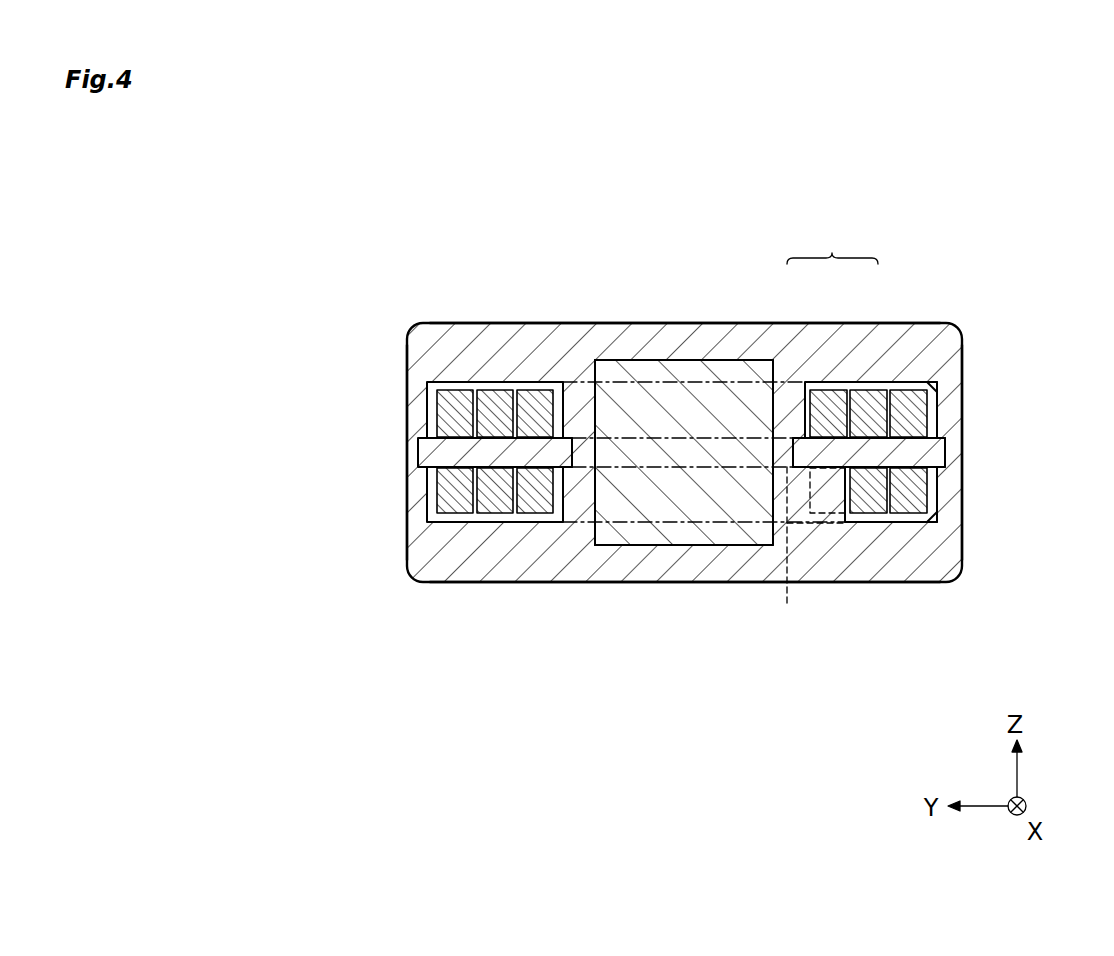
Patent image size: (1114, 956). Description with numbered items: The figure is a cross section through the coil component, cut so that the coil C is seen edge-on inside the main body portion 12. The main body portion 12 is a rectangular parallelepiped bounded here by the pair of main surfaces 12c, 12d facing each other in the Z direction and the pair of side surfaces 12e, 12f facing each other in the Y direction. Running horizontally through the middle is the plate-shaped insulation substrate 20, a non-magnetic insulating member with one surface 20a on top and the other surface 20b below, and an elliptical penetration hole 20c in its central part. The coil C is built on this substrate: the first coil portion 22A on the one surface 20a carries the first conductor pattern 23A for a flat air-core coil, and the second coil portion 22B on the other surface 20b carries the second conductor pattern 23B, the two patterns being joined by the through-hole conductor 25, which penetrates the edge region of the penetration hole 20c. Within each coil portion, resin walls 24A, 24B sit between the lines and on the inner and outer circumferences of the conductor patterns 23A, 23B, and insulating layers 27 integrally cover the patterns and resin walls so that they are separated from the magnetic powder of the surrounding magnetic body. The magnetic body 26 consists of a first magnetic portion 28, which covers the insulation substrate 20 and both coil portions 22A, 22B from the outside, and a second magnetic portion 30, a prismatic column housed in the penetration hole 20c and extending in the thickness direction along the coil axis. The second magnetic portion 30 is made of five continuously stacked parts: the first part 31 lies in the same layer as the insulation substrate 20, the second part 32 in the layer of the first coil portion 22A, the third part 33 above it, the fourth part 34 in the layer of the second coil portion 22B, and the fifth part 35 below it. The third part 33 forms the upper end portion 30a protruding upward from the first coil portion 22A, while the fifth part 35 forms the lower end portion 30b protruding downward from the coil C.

The main body portion 12 is at (368, 209).
The main surface 12c is at (540, 323).
The main surface 12d is at (527, 582).
The side surface 12e is at (962, 555).
The side surface 12f is at (407, 515).
The coil C is at (394, 382).
The insulation substrate 20 is at (948, 455).
The one surface 20a is at (940, 428).
The other surface 20b is at (940, 480).
The penetration hole 20c is at (578, 470).
The first coil portion 22A is at (942, 413).
The second coil portion 22B is at (942, 497).
The first conductor pattern 23A is at (828, 388).
The second conductor pattern 23B is at (908, 515).
The resin wall 24A is at (560, 382).
The resin wall 24B is at (560, 524).
The through-hole conductor 25 is at (811, 550).
The magnetic body 26 is at (832, 244).
The insulating layer 27 is at (940, 380).
The first magnetic portion 28 is at (848, 345).
The second magnetic portion 30 is at (766, 356).
The upper end portion 30a is at (598, 360).
The lower end portion 30b is at (632, 540).
The first part 31 is at (654, 450).
The second part 32 is at (694, 400).
The third part 33 is at (747, 357).
The fourth part 34 is at (703, 492).
The fifth part 35 is at (742, 528).